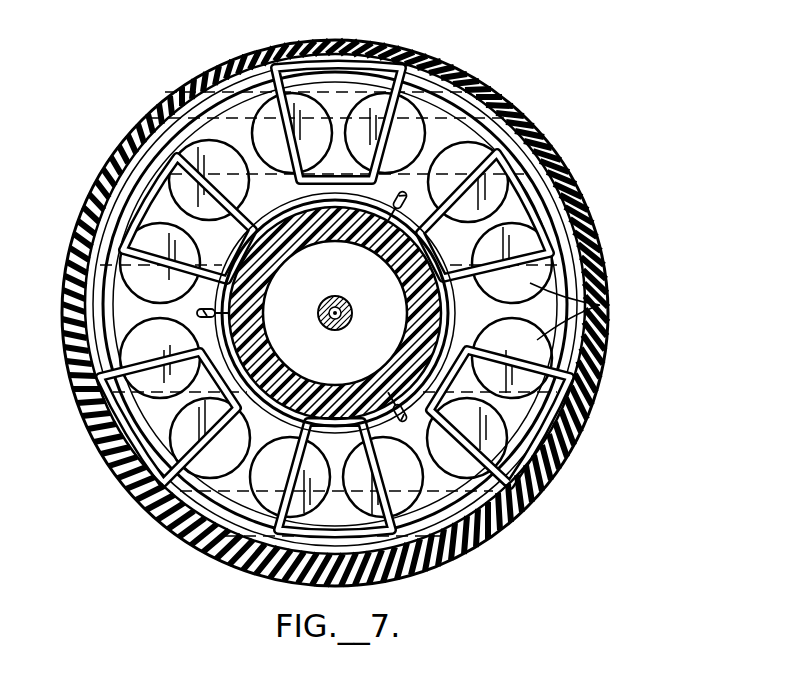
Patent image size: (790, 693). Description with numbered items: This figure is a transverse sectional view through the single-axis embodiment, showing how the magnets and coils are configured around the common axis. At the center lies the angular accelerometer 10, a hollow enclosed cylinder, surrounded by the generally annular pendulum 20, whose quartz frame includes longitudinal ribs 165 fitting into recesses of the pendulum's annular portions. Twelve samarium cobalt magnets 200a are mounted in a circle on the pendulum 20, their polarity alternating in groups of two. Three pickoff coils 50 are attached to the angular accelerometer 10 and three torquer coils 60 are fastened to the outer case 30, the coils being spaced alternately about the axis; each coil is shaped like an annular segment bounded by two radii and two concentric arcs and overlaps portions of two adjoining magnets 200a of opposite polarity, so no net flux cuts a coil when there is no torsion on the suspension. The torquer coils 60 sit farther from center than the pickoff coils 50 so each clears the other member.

The angular accelerometer 10 is at (414, 300).
The pendulum 20 is at (518, 427).
The follow up gimbal (case) 30 is at (522, 512).
The pickoff coils 50 is at (110, 220).
The torquer coils 60 is at (372, 45).
The longitudinal ribs 165 is at (253, 305).
The samarium cobalt magnets 200a is at (600, 302).